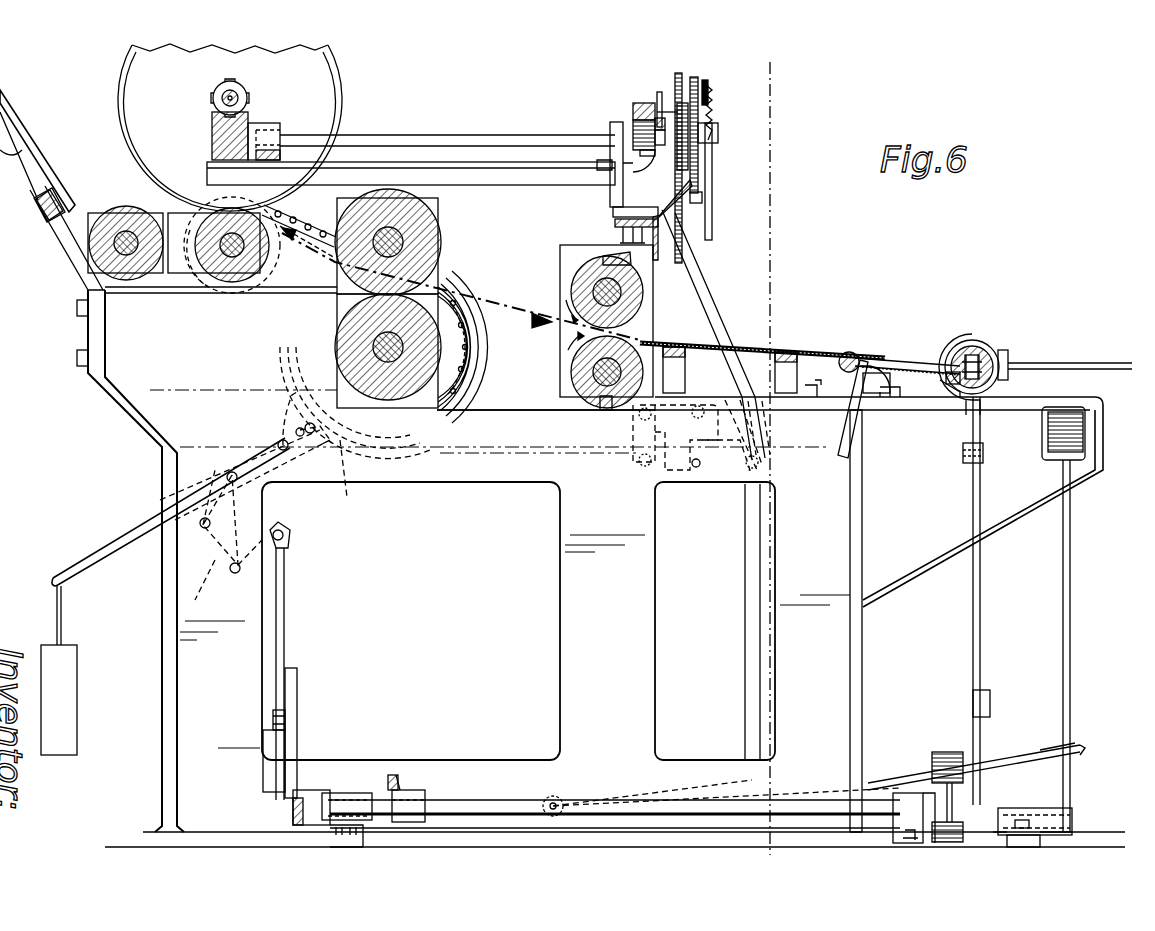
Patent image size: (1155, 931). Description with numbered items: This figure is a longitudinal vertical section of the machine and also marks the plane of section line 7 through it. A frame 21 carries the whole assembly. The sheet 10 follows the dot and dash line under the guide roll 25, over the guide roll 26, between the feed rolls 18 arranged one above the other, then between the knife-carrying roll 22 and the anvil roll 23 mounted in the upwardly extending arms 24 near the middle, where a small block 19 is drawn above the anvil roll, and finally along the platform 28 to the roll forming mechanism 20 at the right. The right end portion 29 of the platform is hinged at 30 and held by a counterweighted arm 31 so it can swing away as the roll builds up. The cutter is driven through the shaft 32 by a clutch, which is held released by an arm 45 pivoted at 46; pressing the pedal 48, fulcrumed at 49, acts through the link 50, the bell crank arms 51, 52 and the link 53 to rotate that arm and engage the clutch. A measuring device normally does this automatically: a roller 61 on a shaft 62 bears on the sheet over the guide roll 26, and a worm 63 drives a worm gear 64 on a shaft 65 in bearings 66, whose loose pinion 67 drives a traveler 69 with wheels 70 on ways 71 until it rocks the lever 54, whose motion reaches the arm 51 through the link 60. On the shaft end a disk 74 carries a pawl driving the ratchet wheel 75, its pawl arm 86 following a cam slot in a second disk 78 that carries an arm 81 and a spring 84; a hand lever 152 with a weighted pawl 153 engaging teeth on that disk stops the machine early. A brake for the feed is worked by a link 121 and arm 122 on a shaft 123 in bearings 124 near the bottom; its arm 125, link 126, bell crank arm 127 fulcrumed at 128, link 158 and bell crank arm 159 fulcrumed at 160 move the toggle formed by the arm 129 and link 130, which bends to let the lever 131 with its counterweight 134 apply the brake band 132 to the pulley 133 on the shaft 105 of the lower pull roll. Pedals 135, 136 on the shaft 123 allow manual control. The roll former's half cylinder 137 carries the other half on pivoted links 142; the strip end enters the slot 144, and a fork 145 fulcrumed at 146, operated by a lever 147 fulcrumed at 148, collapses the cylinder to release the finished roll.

The section line 7- 7 is at (772, 72).
The sheet 10 is at (51, 168).
The feed rolls 18 is at (440, 255).
The roll stop block 19 is at (600, 255).
The roll forming mechanism 20 is at (976, 350).
The frame 21 is at (562, 590).
The knife-carrying roll 22 is at (570, 356).
The anvil roll 23 is at (570, 292).
The upwardly extending arms 24 is at (560, 266).
The guide roll 25 is at (130, 280).
The guide roll 26 is at (222, 278).
The platform 28 is at (810, 350).
The right end portion of platform 29 is at (880, 358).
The hinge 30 is at (853, 352).
The counterweighted arm 31 is at (843, 460).
The shaft of knife-roll 32 is at (600, 400).
The arm 45 is at (638, 430).
The pivot 46 is at (640, 462).
The pedal 48 is at (998, 755).
The fulcrum 49 is at (560, 795).
The link 50 is at (748, 676).
The bell crank arm 51 is at (720, 462).
The bell crank arm 52 is at (705, 405).
The link 53 is at (668, 450).
The lever 54 is at (658, 92).
The link 60 is at (702, 330).
The roller 61 is at (330, 83).
The shaft 62 is at (214, 100).
The worm 63 is at (242, 86).
The worm gear 64 is at (212, 126).
The shaft 65 is at (404, 140).
The bearings 66 is at (272, 120).
The loose pinion 67 is at (632, 193).
The traveler 69 is at (640, 100).
The wheels 70 is at (655, 118).
The ways 71 is at (655, 132).
The disk 74 is at (682, 103).
The ratchet wheel 75 is at (677, 73).
The second disk 78 is at (696, 80).
The arm 81 is at (708, 90).
The spring 84 is at (712, 92).
The pawl arm 86 is at (680, 170).
The shaft of lower pull roll 105 is at (395, 365).
The link 121 is at (392, 775).
The arm 122 is at (400, 790).
The shaft 123 is at (465, 800).
The bearings 124 is at (342, 800).
The arm 125 is at (293, 808).
The link 126 is at (297, 744).
The bell crank arm 127 is at (297, 688).
The fulcrum 128 is at (297, 718).
The arm 129 is at (212, 581).
The link 130 is at (230, 500).
The lever 131 is at (115, 537).
The brake band 132 is at (355, 432).
The pulley 133 is at (470, 375).
The counterweight 134 is at (70, 658).
The pedal 135 is at (932, 752).
The pedal 136 is at (935, 822).
The half cylinder 137 is at (968, 385).
The pivoted links 142 is at (950, 392).
The slot 144 is at (948, 368).
The fork 145 is at (1010, 345).
The fulcrum 146 is at (983, 458).
The lever 147 is at (1070, 565).
The fulcrum 148 is at (1010, 820).
The hand lever 152 is at (712, 218).
The pawl 153 is at (702, 199).
The link 158 is at (286, 638).
The bell crank arm 159 is at (290, 545).
The fulcrum 160 is at (235, 558).